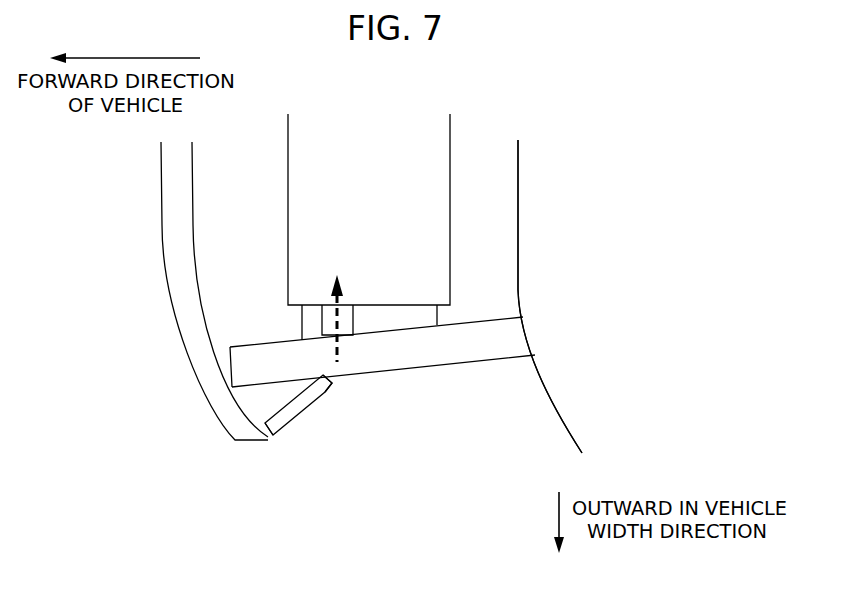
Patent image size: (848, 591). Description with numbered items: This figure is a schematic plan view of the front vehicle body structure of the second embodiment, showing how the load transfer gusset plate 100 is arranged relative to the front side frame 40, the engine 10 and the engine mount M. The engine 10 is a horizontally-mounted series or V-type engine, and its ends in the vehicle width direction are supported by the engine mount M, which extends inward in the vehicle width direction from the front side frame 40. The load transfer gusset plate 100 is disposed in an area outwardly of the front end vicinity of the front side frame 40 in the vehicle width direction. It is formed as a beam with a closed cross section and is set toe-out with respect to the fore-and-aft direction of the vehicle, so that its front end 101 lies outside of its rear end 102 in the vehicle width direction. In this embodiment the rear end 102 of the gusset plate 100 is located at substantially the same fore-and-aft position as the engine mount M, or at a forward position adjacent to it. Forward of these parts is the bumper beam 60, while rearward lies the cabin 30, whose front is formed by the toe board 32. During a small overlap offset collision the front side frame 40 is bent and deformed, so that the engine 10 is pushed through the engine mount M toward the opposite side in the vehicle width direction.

The engine 10 is at (306, 245).
The cabin 30 is at (563, 398).
The toe board 32 is at (550, 296).
The front side frame 40 is at (413, 357).
The bumper beam 60 is at (173, 174).
The load transfer gusset plate 100 is at (300, 402).
The front end 101 is at (275, 438).
The rear end 102 is at (322, 392).
The engine mount M is at (332, 322).